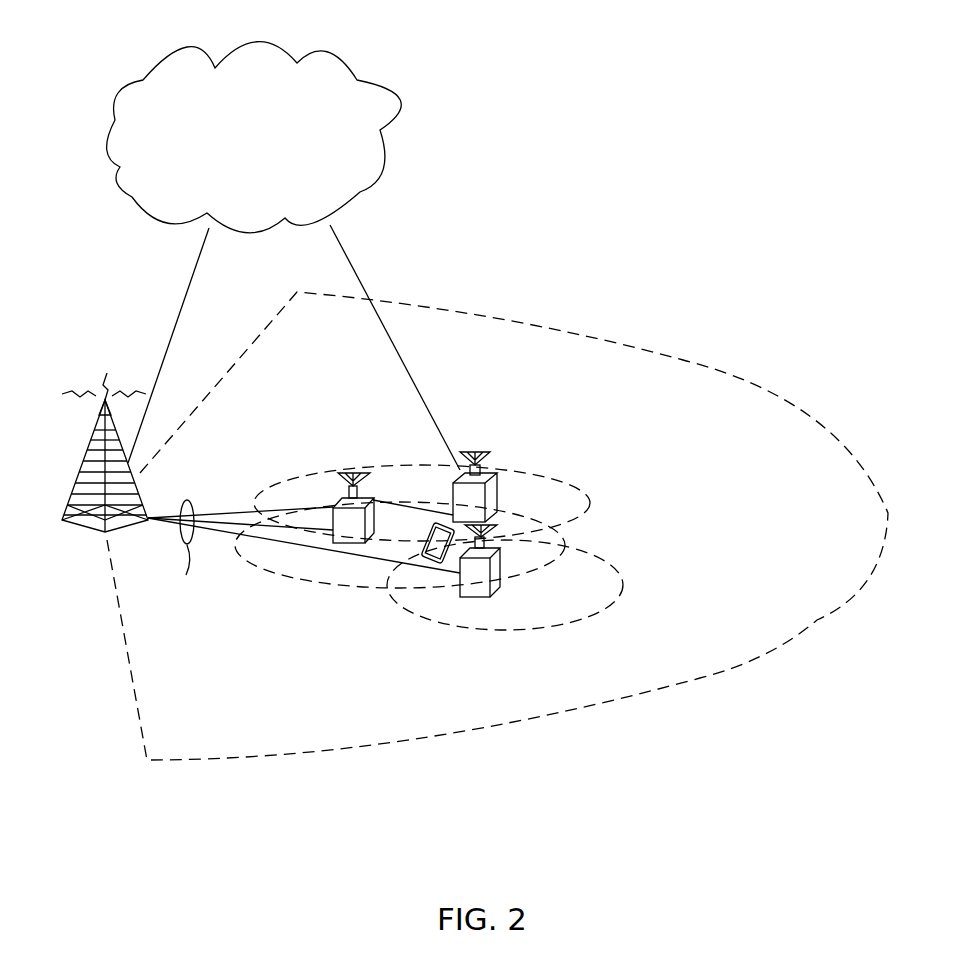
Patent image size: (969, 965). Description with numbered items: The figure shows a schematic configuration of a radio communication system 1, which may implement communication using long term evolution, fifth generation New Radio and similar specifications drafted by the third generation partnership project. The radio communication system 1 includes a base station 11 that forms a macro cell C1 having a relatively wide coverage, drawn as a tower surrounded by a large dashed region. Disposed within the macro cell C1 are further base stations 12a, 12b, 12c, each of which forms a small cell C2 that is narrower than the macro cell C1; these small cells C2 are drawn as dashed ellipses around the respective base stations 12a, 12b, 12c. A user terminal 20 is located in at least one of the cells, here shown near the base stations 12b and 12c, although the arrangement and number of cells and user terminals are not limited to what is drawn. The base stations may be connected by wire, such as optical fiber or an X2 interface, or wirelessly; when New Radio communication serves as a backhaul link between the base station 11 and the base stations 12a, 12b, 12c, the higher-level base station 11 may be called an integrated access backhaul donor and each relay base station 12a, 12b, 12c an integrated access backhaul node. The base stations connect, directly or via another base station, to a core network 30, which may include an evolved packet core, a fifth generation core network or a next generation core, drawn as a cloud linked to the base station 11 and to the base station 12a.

The radio communication system 1 is at (612, 169).
The base station 11 is at (83, 460).
The base station 12a is at (493, 487).
The base station 12b is at (473, 597).
The base station 12c is at (338, 502).
The user terminal 20 is at (417, 553).
The core network 30 is at (330, 53).
The macro cell C1 is at (687, 360).
The small cell C2 is at (300, 587).